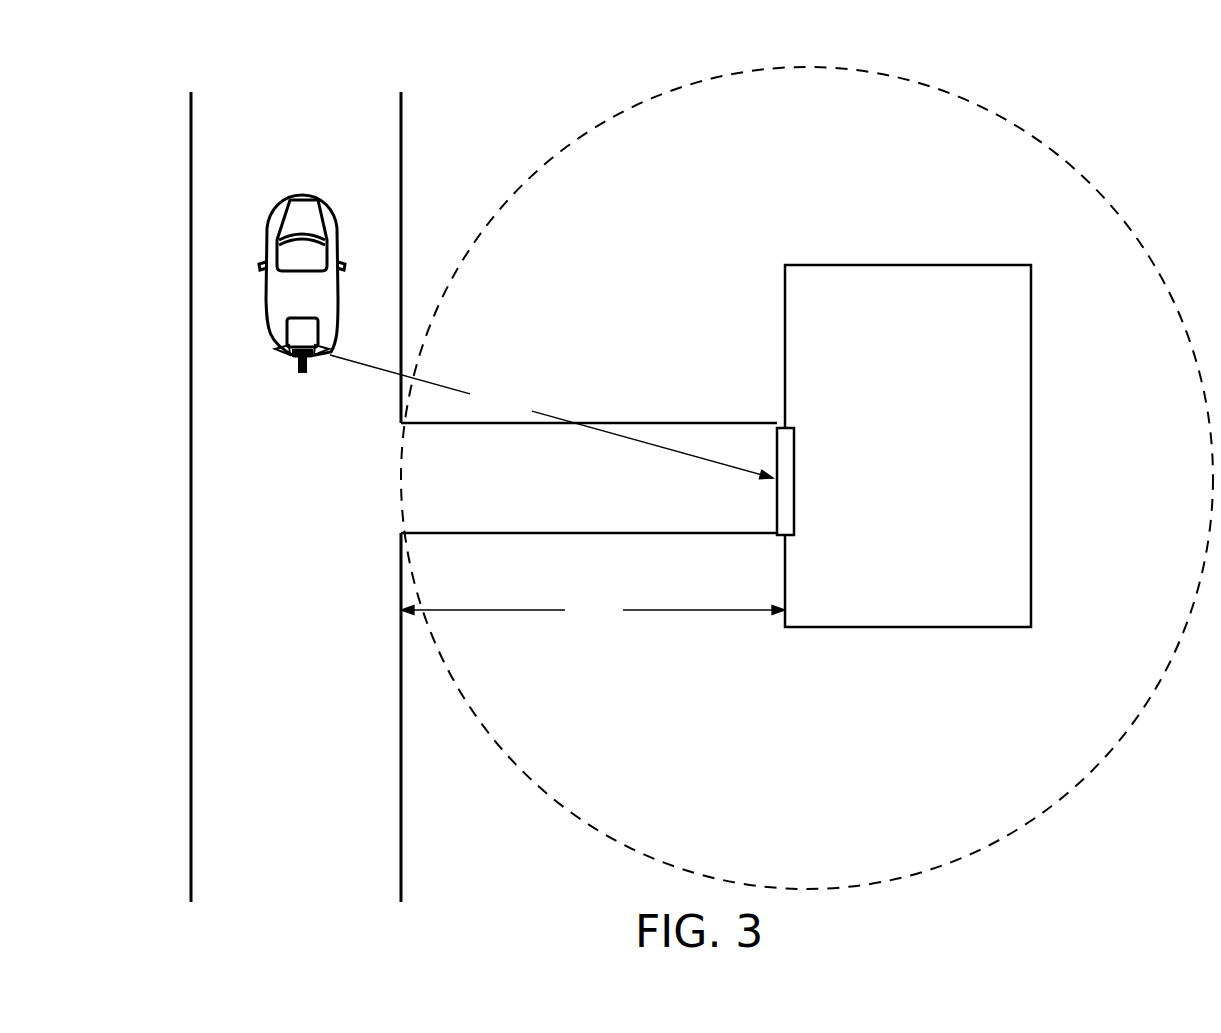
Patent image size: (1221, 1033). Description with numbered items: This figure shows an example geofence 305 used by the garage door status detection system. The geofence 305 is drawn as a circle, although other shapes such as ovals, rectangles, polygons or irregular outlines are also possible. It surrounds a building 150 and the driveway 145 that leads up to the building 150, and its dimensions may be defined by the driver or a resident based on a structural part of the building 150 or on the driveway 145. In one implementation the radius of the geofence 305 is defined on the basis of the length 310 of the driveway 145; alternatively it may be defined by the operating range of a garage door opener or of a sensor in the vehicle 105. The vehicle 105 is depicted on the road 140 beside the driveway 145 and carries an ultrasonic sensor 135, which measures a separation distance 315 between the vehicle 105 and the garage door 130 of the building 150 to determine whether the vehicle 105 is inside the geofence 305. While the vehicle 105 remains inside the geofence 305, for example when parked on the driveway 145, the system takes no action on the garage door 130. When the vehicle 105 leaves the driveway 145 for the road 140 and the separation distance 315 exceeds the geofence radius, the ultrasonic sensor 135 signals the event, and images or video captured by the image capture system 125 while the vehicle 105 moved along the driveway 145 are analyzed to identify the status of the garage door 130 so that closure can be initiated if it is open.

The vehicle 105 is at (299, 276).
The image capture system 125 is at (306, 378).
The garage door 130 is at (795, 487).
The ultrasonic sensor 135 is at (292, 353).
The road 140 is at (296, 497).
The driveway 145 is at (561, 489).
The building 150 is at (955, 247).
The geofence 305 is at (810, 67).
The length of the driveway 310 is at (593, 611).
The separation distance 315 is at (551, 417).